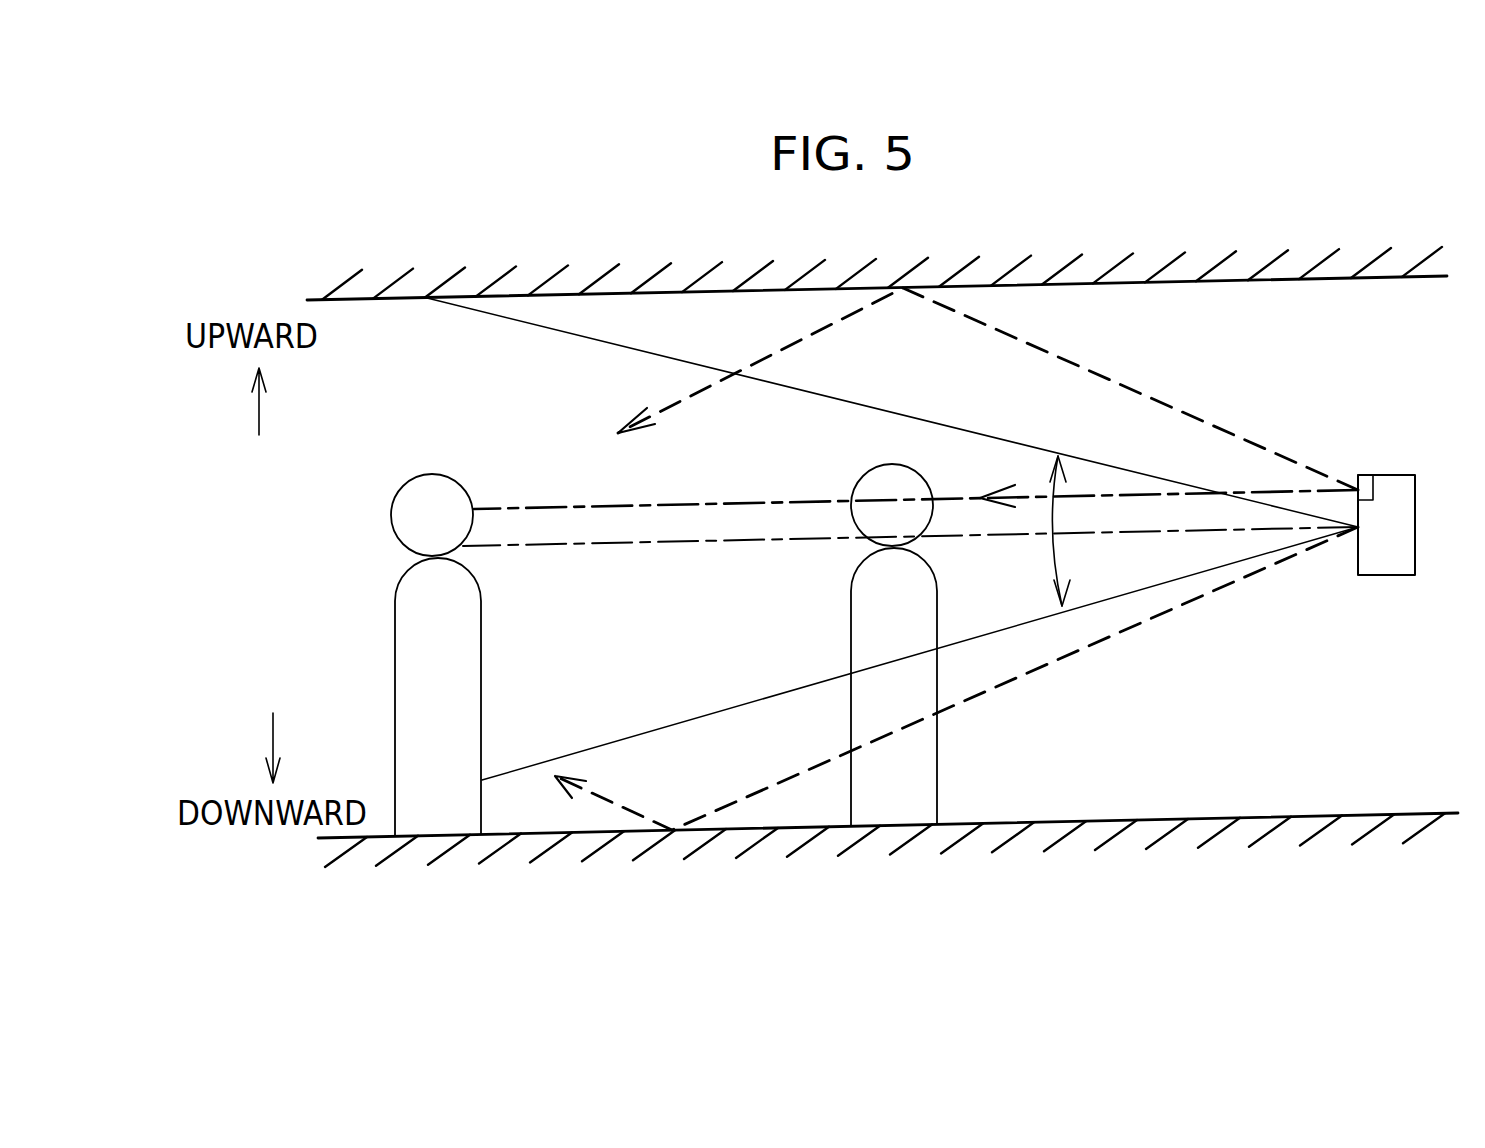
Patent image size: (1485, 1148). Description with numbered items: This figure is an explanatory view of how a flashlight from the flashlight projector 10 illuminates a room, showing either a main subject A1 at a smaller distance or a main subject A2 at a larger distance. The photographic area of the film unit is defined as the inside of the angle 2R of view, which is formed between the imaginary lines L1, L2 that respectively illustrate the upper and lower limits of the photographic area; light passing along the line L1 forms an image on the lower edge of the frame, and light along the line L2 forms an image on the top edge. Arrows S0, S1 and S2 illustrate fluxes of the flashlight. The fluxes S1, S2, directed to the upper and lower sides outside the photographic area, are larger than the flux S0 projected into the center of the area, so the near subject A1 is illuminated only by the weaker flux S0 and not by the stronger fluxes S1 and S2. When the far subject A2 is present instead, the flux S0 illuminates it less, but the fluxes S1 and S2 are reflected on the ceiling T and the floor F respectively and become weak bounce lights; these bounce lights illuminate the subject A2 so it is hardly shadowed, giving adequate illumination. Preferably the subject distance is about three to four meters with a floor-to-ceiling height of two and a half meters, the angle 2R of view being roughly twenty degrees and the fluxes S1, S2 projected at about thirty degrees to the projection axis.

The object detection device 10 is at (1358, 475).
The ceiling T is at (1225, 282).
The floor F is at (1215, 817).
The flux S0 is at (672, 502).
The flux S1 is at (1046, 352).
The flux S2 is at (1018, 673).
The imaginary line L1 is at (913, 416).
The imaginary line L2 is at (640, 732).
The angle of view 2R is at (1034, 531).
The main subject A1 is at (850, 602).
The main subject A2 is at (484, 678).